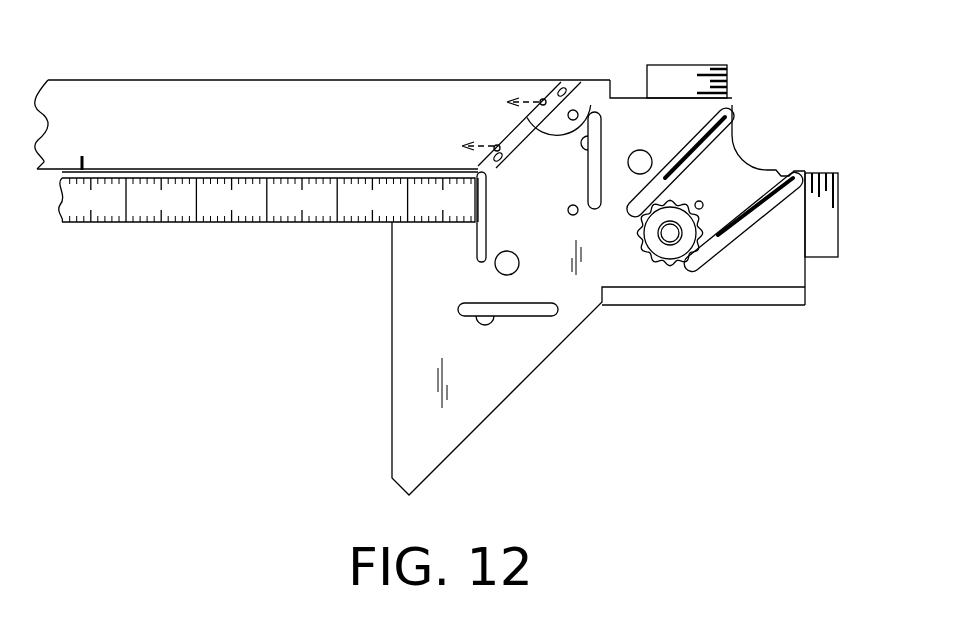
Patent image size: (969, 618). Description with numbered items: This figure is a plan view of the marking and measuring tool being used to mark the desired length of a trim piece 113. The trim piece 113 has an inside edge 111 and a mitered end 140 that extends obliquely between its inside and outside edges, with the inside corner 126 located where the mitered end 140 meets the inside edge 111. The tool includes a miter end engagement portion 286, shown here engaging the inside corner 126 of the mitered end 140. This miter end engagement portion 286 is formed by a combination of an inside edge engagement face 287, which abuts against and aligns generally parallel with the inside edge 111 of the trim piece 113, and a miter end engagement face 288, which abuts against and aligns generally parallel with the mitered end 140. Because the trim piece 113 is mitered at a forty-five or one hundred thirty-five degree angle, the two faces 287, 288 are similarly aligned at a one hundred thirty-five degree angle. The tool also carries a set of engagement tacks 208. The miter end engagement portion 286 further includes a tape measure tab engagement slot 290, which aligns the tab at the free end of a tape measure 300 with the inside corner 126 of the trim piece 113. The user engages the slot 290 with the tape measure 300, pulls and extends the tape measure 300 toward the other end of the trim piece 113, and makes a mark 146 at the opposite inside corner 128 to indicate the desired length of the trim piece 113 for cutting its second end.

The trim piece 113 is at (300, 123).
The mark 146 is at (86, 157).
The inside corner 128 is at (83, 170).
The tape measure 300 is at (278, 200).
The inside edge 111 is at (332, 170).
The inside edge engagement face 287 is at (443, 168).
The tape measure tab engagement slot 290 is at (482, 247).
The inside corner 126 is at (483, 170).
The mitered end 140 is at (573, 128).
The miter end engagement face 288 is at (546, 95).
The engagement tacks 208 is at (472, 143).
The miter end engagement portion 286 is at (458, 97).